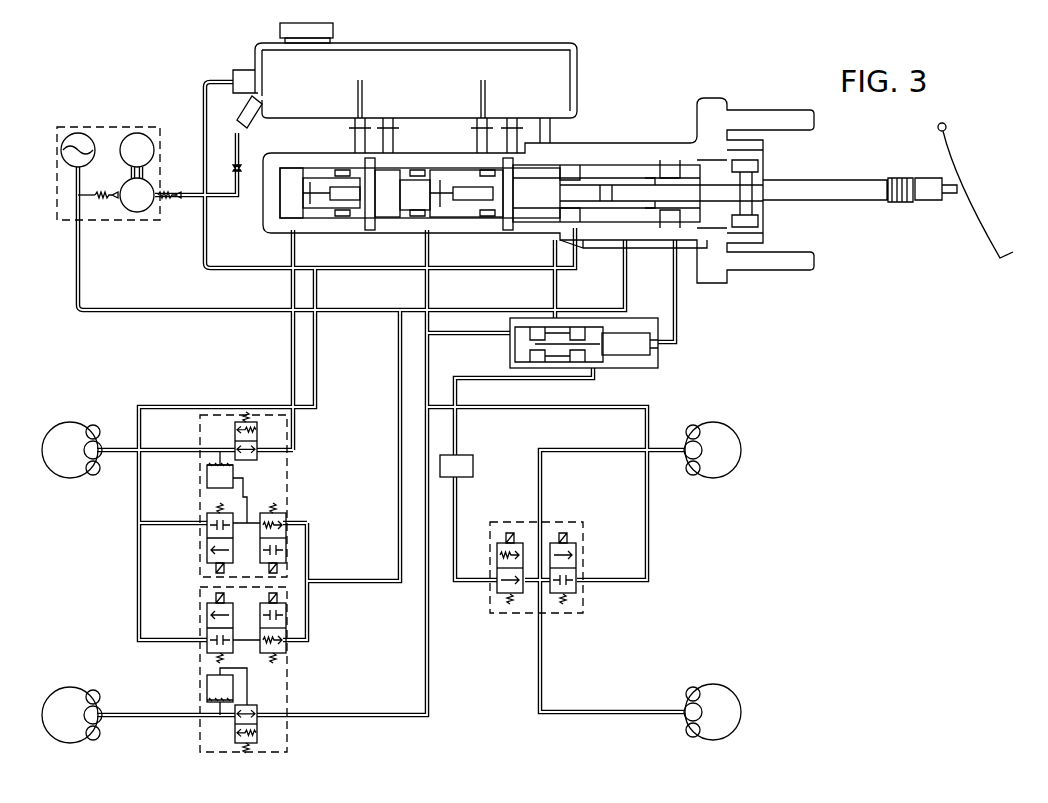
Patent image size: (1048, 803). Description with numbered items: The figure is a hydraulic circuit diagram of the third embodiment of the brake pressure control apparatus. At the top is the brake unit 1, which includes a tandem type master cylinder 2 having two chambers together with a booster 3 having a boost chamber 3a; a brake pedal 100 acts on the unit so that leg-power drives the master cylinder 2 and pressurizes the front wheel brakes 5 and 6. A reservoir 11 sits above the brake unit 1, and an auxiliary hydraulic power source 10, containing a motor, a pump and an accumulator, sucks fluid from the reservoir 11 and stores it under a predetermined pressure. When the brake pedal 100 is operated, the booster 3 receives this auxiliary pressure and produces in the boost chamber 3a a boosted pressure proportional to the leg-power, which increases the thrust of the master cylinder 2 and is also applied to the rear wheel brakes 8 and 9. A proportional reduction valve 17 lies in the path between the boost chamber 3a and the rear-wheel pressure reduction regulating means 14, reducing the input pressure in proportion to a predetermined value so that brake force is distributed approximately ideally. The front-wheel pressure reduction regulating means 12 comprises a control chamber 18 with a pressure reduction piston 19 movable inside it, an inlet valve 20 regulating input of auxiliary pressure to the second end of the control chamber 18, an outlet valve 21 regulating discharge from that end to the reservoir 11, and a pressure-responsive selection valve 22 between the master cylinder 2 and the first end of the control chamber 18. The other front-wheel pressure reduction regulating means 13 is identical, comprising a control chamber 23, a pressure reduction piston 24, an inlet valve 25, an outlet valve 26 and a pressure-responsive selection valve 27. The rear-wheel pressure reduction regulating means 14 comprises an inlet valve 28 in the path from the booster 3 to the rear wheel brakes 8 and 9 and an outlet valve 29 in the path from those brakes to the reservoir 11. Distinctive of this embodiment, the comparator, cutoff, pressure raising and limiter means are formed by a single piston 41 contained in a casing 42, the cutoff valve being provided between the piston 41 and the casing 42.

The brake unit 1 is at (632, 84).
The master cylinder 2 is at (334, 236).
The booster 3 is at (636, 132).
The boost chamber 3a is at (706, 245).
The front wheel brake 5 is at (97, 452).
The front wheel brake 6 is at (97, 717).
The rear wheel brake 8 is at (688, 440).
The rear wheel brake 9 is at (688, 705).
The auxiliary hydraulic power source 10 is at (95, 125).
The reservoir 11 is at (440, 50).
The pressure reduction regulating means 12 is at (288, 458).
The pressure reduction regulating means 13 is at (290, 662).
The pressure reduction regulating means 14 is at (588, 600).
The proportional reduction valve 17 is at (465, 455).
The control chamber 18 is at (207, 482).
The pressure reduction piston 19 is at (209, 466).
The inlet valve 20 is at (286, 520).
The outlet valve 21 is at (205, 518).
The pressure-responsive selection valve 22 is at (245, 420).
The control chamber 23 is at (206, 690).
The pressure reduction piston 24 is at (207, 686).
The inlet valve 25 is at (286, 642).
The outlet valve 26 is at (206, 602).
The pressure-responsive selection valve 27 is at (258, 731).
The inlet valve 28 is at (500, 545).
The outlet valve 29 is at (578, 545).
The piston 41 is at (604, 352).
The casing 42 is at (511, 360).
The brake pedal 100 is at (972, 214).